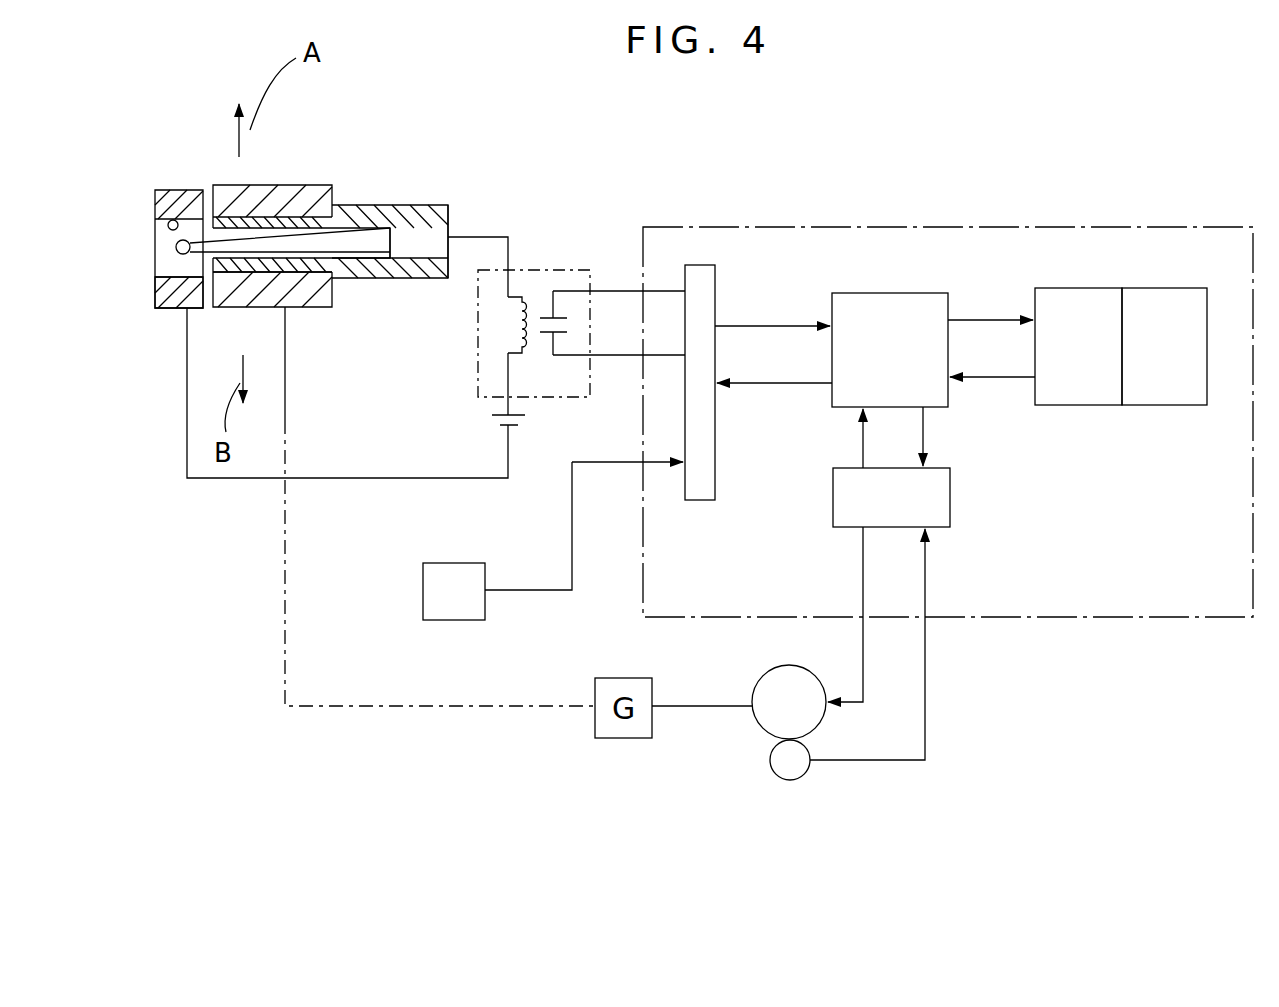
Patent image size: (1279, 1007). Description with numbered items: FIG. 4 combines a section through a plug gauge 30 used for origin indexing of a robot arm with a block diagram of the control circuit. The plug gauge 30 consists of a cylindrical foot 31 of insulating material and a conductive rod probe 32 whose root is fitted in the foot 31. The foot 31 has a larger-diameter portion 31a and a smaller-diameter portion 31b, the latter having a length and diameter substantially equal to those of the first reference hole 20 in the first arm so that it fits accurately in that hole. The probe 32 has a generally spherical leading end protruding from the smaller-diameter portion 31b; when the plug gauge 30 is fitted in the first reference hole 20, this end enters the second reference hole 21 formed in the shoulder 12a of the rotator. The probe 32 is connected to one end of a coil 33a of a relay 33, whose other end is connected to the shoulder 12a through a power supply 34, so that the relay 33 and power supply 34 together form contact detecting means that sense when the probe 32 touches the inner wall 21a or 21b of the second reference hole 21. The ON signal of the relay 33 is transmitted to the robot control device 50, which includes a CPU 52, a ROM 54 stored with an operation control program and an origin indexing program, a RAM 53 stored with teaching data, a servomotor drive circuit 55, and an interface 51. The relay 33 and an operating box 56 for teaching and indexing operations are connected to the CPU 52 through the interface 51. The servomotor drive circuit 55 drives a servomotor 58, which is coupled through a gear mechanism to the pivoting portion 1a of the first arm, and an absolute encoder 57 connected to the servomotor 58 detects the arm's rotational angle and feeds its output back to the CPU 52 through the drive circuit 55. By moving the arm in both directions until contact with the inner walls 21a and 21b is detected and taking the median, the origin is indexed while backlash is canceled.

The pivoting portion 1a is at (285, 200).
The shoulder 12a is at (157, 298).
The first reference hole 20 is at (305, 207).
The second reference hole 21 is at (163, 237).
The inner wall 21a is at (176, 220).
The inner wall 21b is at (163, 272).
The plug gauge 30 is at (399, 202).
The cylindrical foot 31 is at (385, 270).
The larger-diameter portion 31a is at (432, 215).
The smaller-diameter portion 31b is at (297, 272).
The rod probe 32 is at (345, 245).
The relay 33 is at (544, 270).
The coil 33a is at (520, 332).
The power supply 34 is at (521, 420).
The robot control device 50 is at (705, 227).
The interface 51 is at (705, 287).
The CPU 52 is at (898, 293).
The RAM 53 is at (1073, 288).
The ROM 54 is at (1152, 288).
The servomotor drive circuit 55 is at (840, 485).
The operating box 56 is at (460, 620).
The absolute encoder 57 is at (770, 763).
The servomotor 58 is at (757, 683).